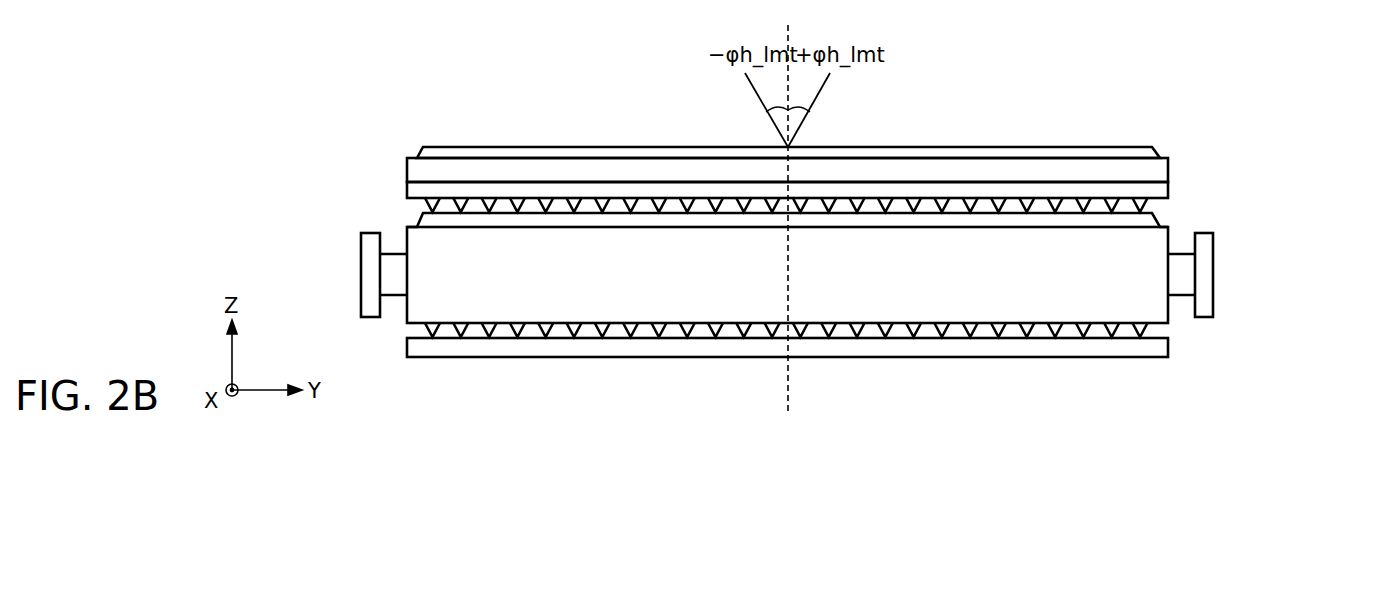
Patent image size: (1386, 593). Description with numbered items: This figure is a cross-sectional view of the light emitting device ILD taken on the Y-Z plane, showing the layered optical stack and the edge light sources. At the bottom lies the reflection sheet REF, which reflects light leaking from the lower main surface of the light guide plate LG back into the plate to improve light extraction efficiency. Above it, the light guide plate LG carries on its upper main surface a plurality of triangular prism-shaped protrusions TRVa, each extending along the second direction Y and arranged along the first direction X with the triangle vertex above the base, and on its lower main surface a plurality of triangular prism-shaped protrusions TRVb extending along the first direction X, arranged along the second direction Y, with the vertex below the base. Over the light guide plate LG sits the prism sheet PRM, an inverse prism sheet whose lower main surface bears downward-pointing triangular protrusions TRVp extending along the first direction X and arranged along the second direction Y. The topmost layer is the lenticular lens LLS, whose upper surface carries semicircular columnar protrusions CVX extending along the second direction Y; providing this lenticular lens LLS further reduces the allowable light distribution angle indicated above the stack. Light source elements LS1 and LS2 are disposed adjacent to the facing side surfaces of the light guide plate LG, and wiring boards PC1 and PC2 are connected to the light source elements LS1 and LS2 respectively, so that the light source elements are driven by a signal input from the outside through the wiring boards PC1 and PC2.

The light emitting device ILD is at (997, 70).
The protrusions CVX is at (1108, 147).
The lenticular lens LLS is at (1168, 162).
The prism sheet PRM is at (406, 192).
The protrusions TRVp is at (422, 201).
The protrusions TRVa is at (1154, 219).
The light guide plate LG is at (962, 290).
The protrusions TRVb is at (1148, 327).
The reflection sheet REF is at (1088, 358).
The wiring board PC1 is at (360, 265).
The light source elements LS1 is at (390, 281).
The wiring board PC2 is at (1214, 257).
The light source elements LS2 is at (1187, 282).